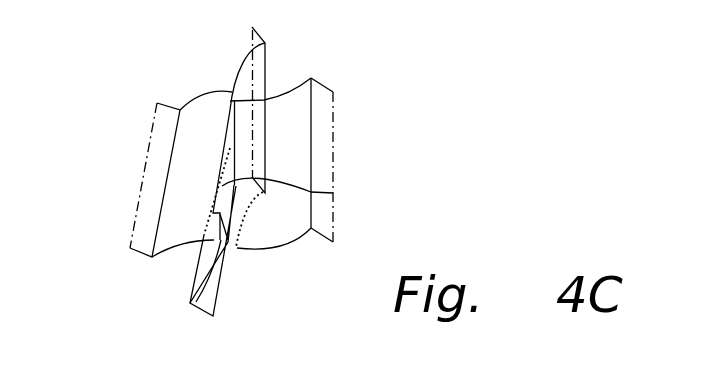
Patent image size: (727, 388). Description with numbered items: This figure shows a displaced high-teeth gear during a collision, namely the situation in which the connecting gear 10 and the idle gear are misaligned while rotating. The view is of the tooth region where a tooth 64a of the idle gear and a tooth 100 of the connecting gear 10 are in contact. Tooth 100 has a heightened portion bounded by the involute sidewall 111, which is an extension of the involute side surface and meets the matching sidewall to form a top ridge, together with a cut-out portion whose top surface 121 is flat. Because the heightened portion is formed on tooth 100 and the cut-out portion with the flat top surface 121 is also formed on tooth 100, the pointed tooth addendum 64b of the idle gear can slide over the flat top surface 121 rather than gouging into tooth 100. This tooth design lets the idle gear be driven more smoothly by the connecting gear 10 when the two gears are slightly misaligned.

The connecting gear 10 is at (112, 175).
The tooth of idle gear 64a is at (255, 88).
The tooth addendum of idle gear 64b is at (233, 95).
The tooth 100 is at (237, 262).
The involute sidewall 111 is at (213, 218).
The top surface 121 is at (333, 193).